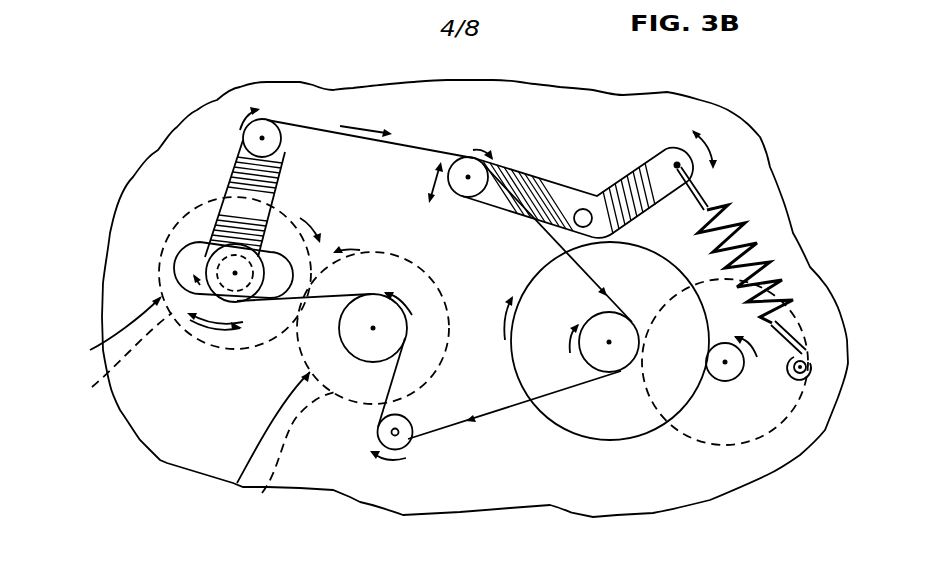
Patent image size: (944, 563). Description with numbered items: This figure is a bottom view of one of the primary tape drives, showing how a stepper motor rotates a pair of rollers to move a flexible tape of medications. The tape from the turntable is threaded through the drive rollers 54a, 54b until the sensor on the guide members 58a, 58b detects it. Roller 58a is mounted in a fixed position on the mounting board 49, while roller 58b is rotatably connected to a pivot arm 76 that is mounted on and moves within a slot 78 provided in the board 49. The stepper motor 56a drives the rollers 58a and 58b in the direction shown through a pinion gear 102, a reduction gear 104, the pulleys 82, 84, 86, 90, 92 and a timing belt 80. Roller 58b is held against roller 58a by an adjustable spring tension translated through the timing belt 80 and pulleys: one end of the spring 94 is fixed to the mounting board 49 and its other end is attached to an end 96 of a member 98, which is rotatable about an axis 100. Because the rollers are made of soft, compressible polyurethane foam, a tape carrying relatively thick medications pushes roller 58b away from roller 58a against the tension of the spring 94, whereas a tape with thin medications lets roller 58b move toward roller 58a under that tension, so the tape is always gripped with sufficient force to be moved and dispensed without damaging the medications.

The mounting board 49 is at (537, 82).
The timing belt 80 is at (313, 127).
The pulley 86 is at (245, 137).
The pivot arm 76 is at (240, 185).
The slot 78 is at (205, 260).
The pulley 84 is at (205, 262).
The roller 58b is at (105, 333).
The drive roller 54b is at (111, 355).
The roller 58a is at (237, 483).
The drive roller 54a is at (279, 457).
The pulley 82 is at (372, 362).
The pulley 92 is at (413, 432).
The reduction gear 104 is at (568, 432).
The pulley 90 is at (625, 370).
The pinion gear 102 is at (740, 378).
The stepper motor 56a is at (717, 445).
The member 98 is at (538, 180).
The axis 100 is at (587, 210).
The end of member 96 is at (677, 160).
The spring 94 is at (747, 237).